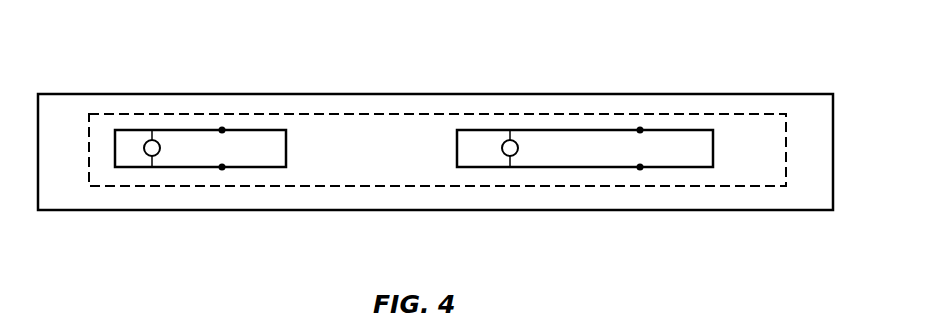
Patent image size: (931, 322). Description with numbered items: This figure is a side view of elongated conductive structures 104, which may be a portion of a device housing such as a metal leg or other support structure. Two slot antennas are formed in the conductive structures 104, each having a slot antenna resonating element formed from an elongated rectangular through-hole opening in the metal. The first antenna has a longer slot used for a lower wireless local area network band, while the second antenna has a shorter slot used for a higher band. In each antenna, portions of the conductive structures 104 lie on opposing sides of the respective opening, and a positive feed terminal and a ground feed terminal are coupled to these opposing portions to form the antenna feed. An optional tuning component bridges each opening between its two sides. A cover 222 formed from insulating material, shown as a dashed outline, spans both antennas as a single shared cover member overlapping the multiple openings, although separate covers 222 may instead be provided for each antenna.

The conductive structures 104 is at (798, 102).
The cover 222 is at (750, 188).